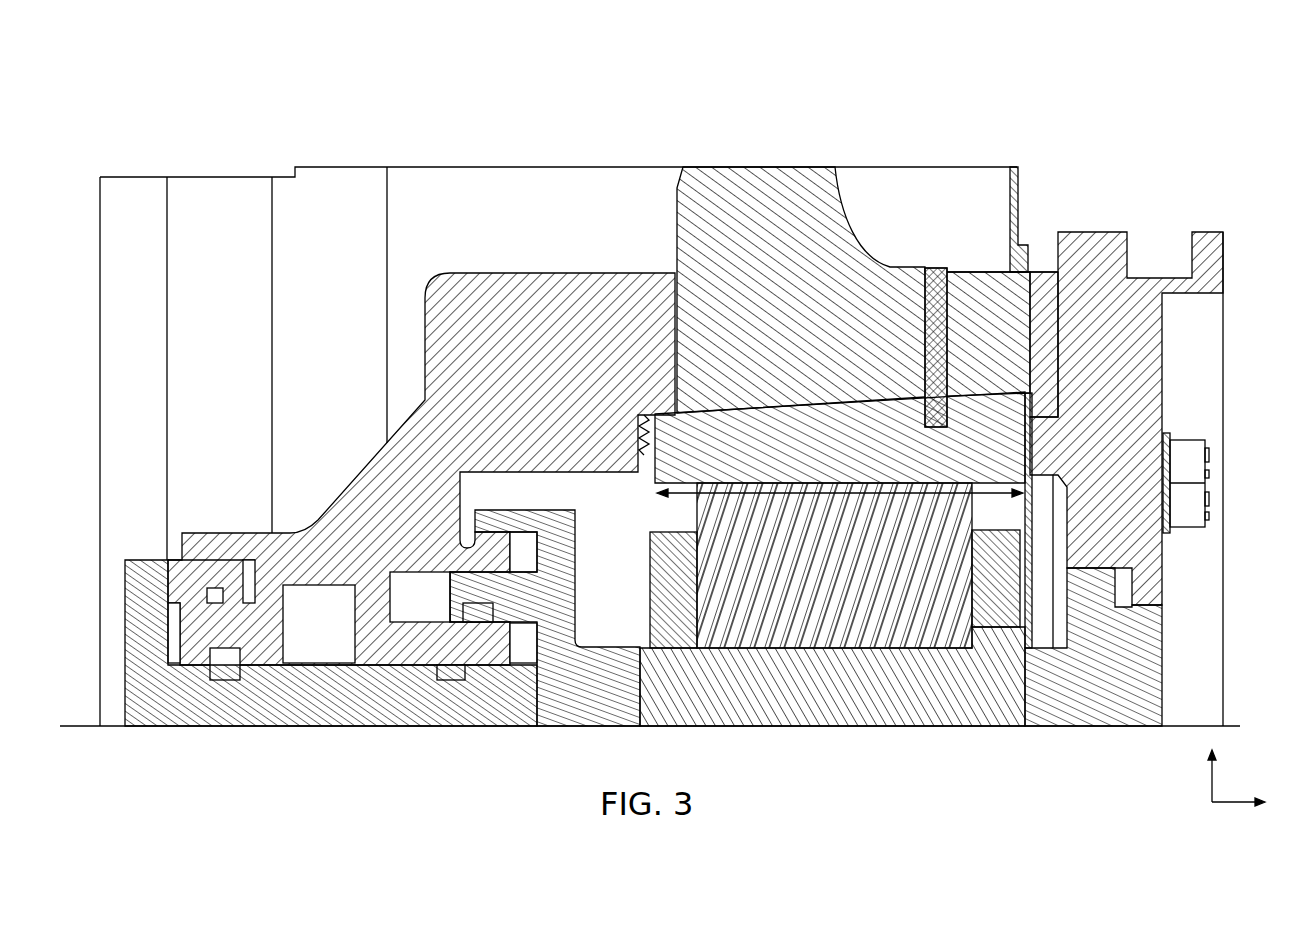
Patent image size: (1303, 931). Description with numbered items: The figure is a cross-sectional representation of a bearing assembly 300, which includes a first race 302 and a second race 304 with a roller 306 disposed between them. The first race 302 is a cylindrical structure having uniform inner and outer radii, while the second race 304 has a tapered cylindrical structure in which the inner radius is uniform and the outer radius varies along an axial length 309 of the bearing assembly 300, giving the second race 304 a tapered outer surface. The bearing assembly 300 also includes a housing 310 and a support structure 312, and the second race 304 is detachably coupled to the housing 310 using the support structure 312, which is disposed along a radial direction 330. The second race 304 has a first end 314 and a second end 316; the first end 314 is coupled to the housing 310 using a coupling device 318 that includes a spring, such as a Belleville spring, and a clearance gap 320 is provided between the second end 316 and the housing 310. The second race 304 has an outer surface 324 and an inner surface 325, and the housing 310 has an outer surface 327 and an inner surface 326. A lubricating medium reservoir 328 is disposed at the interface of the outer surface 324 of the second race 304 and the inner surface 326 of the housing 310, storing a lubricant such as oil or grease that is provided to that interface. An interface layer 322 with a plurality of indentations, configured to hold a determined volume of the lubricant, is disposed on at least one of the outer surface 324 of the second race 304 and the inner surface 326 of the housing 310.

The bearing assembly 300 is at (1175, 80).
The first race 302 is at (846, 694).
The second race 304 is at (870, 457).
The roller 306 is at (856, 572).
The axial length 309 is at (674, 496).
The housing 310 is at (603, 293).
The support structure 312 is at (935, 267).
The first end 314 is at (637, 417).
The second end 316 is at (1046, 393).
The coupling device 318 is at (645, 465).
The clearance gap 320 is at (1032, 427).
The interface layer 322 is at (840, 405).
The outer surface 324 is at (715, 410).
The inner surface 325 is at (992, 483).
The inner surface 326 is at (752, 433).
The outer surface 327 is at (785, 167).
The lubricating medium reservoir 328 is at (952, 390).
The radial direction 330 is at (1212, 784).